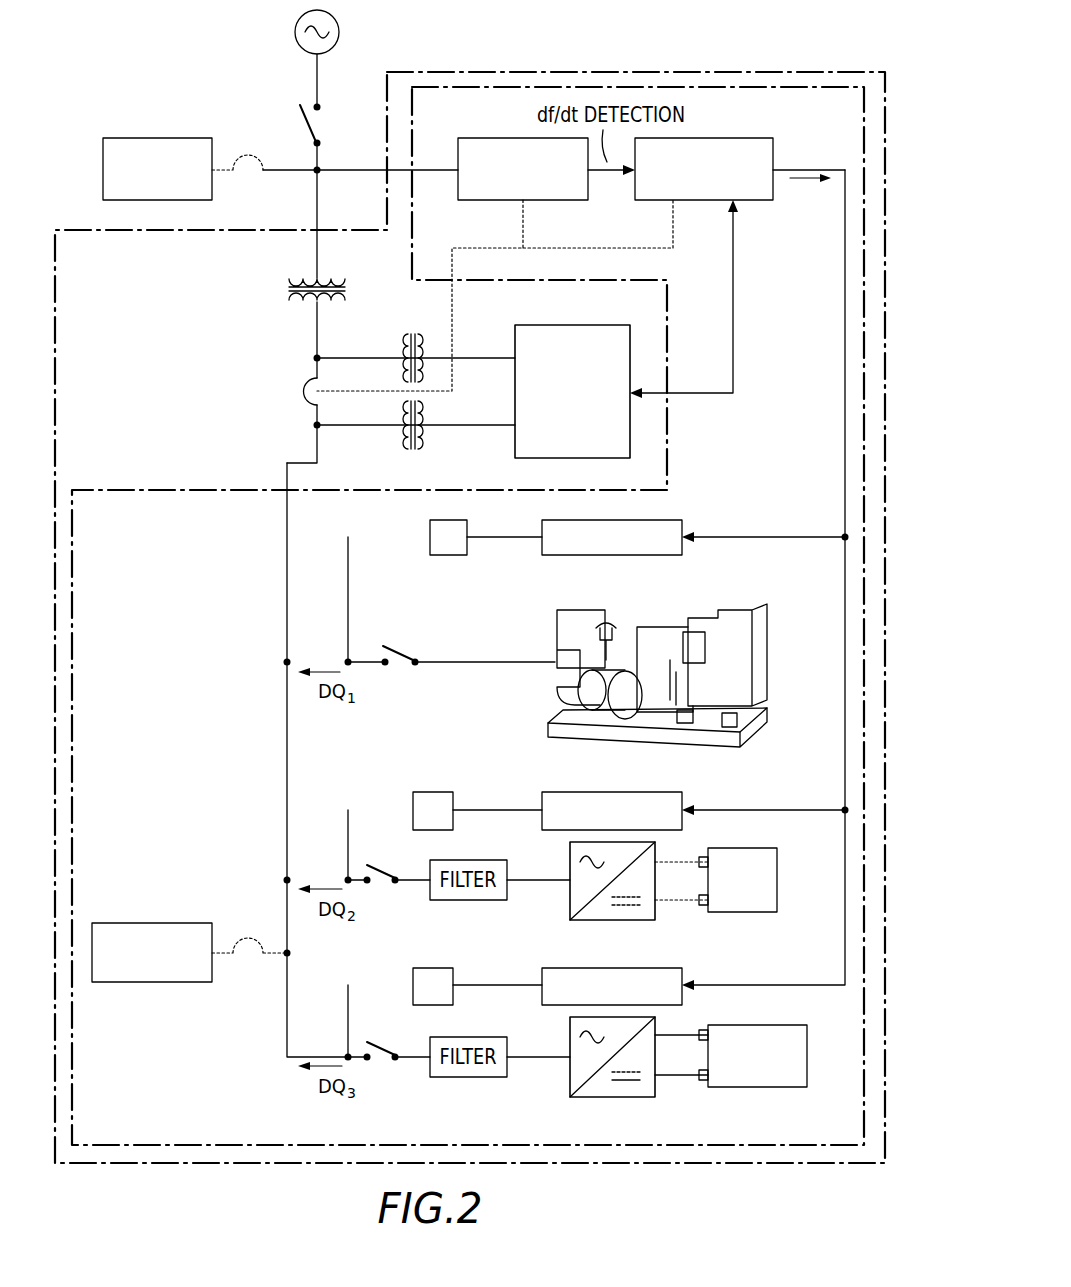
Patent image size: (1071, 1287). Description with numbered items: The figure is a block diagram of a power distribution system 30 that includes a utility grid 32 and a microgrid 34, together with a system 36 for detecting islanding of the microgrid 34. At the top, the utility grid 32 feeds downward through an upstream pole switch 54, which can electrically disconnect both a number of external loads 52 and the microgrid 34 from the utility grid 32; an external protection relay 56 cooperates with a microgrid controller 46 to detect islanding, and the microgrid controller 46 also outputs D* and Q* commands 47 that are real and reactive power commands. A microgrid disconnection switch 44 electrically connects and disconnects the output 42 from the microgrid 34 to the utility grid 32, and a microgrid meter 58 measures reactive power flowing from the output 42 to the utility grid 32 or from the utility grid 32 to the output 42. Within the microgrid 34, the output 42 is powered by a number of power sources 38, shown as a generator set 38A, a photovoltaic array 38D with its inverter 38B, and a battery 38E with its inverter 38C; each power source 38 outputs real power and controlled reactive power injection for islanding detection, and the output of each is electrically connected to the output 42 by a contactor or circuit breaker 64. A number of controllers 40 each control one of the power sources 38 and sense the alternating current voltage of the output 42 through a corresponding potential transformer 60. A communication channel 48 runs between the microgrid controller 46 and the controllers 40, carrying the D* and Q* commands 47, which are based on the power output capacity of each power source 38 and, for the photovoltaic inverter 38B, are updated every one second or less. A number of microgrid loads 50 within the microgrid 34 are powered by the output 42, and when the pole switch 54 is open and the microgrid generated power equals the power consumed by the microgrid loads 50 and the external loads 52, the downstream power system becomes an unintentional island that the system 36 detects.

The power distribution system 30 is at (165, 63).
The utility grid 32 is at (300, 13).
The microgrid 34 is at (492, 85).
The system for detecting islanding 36 is at (693, 70).
The power sources 38 is at (645, 861).
The generator set 38A is at (748, 616).
The inverter 38B is at (622, 922).
The inverter 38C is at (622, 1098).
The photovoltaic array 38D is at (753, 915).
The battery 38E is at (773, 1090).
The controllers 40 is at (617, 556).
The output 42 is at (283, 661).
The microgrid disconnection switch 44 is at (302, 380).
The microgrid controller 46 is at (720, 138).
The D* and Q* commands 47 is at (795, 208).
The communication channel 48 is at (834, 378).
The microgrid loads 50 is at (146, 922).
The external loads 52 is at (143, 137).
The pole switch 54 is at (298, 106).
The protection relay 56 is at (481, 202).
The microgrid meter 58 is at (568, 325).
The potential transformer 60 is at (440, 556).
The contactor or circuit breaker 64 is at (398, 651).